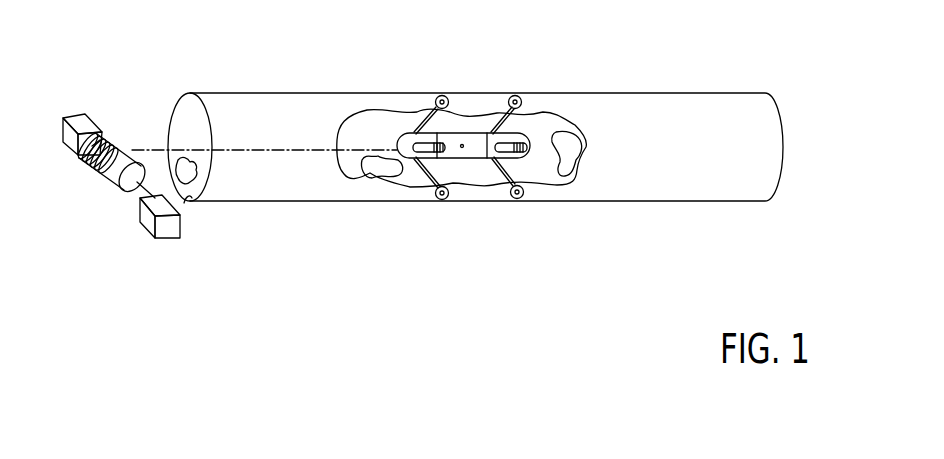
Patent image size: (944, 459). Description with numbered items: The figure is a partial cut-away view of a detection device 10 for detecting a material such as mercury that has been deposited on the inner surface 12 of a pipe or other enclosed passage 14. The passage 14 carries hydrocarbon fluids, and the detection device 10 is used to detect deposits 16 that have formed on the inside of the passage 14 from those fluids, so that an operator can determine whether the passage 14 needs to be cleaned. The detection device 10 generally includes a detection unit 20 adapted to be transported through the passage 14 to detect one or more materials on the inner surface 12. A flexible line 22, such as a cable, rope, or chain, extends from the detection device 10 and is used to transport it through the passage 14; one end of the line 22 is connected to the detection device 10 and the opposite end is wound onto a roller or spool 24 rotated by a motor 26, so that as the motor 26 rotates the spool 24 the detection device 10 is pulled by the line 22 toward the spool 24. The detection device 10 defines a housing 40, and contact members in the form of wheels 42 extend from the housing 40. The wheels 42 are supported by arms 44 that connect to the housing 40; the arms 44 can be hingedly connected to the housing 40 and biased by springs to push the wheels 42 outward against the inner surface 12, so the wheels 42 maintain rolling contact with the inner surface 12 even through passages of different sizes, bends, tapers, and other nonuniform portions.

The detection device 10 is at (506, 56).
The inner surface 12 is at (189, 118).
The passage 14 is at (279, 93).
The deposits 16 is at (186, 197).
The detection unit 20 is at (463, 147).
The flexible line 22 is at (154, 149).
The spool 24 is at (88, 165).
The motor 26 is at (83, 117).
The housing 40 is at (398, 140).
The wheels 42 is at (527, 102).
The arms 44 is at (489, 120).